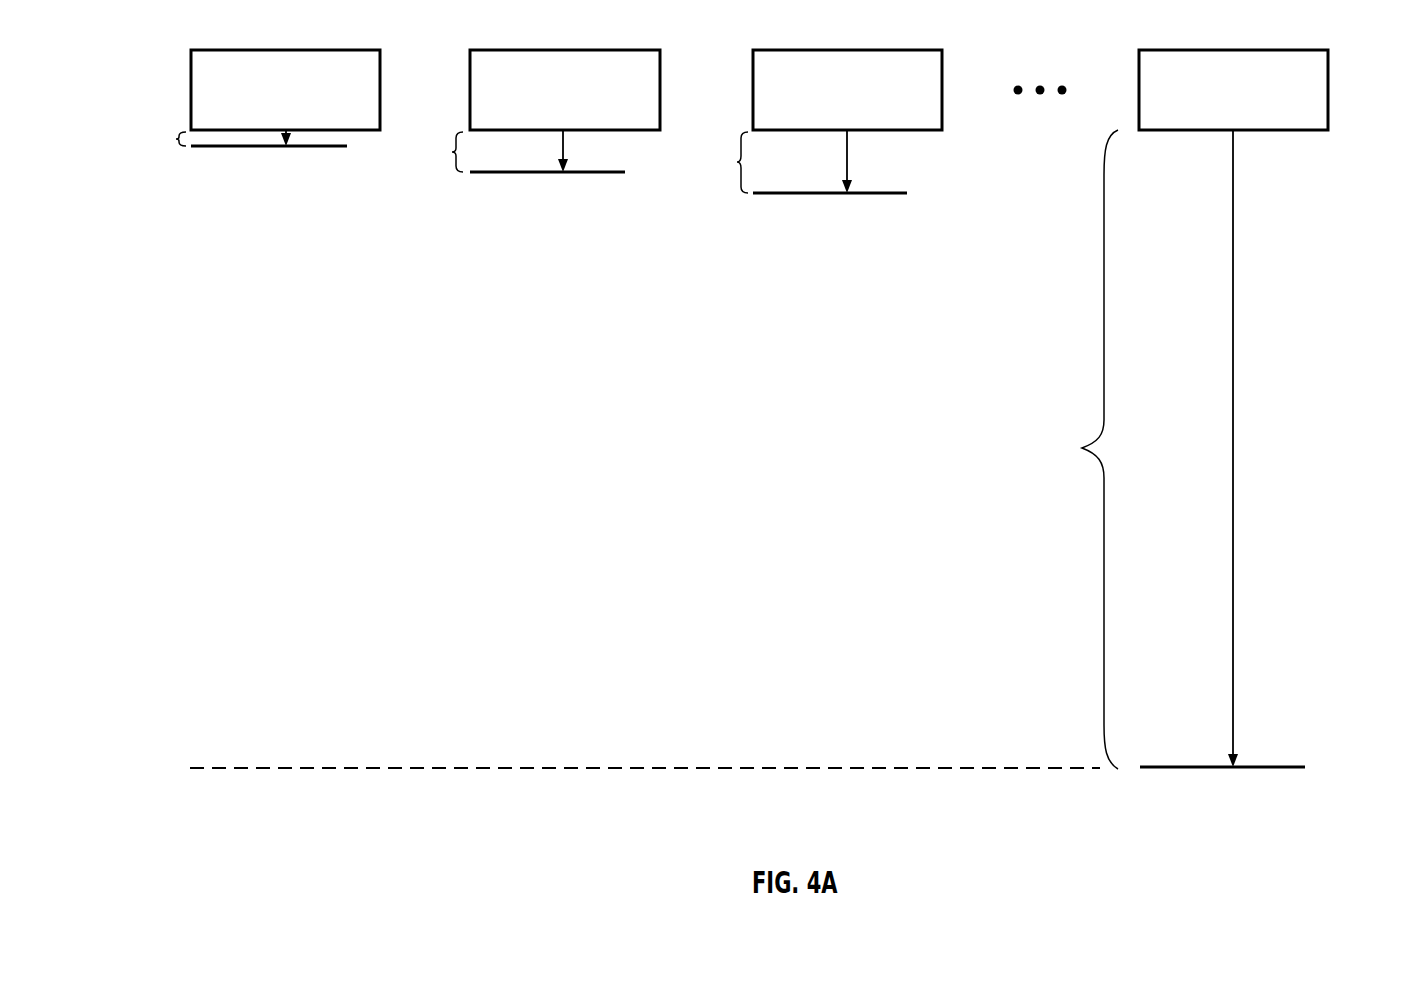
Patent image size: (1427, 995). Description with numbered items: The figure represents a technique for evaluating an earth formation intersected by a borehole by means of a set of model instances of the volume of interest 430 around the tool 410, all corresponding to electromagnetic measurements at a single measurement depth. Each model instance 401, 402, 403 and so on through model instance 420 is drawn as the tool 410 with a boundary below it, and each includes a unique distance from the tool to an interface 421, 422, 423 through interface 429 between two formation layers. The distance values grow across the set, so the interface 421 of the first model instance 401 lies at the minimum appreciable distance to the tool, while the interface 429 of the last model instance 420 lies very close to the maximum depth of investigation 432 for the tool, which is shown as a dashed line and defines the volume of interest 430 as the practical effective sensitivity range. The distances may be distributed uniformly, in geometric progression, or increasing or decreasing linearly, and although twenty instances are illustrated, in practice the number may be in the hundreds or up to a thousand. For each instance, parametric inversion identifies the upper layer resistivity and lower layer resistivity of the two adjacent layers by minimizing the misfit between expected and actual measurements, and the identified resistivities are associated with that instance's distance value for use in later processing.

The model instance 401 is at (274, 34).
The model instance 402 is at (552, 34).
The model instance 403 is at (830, 34).
The model instance 420 is at (1217, 34).
The tool 410 is at (191, 90).
The interface 421 is at (225, 148).
The interface 422 is at (513, 174).
The interface 423 is at (797, 195).
The interface 429 is at (1150, 770).
The volume of interest 430 is at (248, 489).
The maximum depth of investigation 432 is at (242, 768).